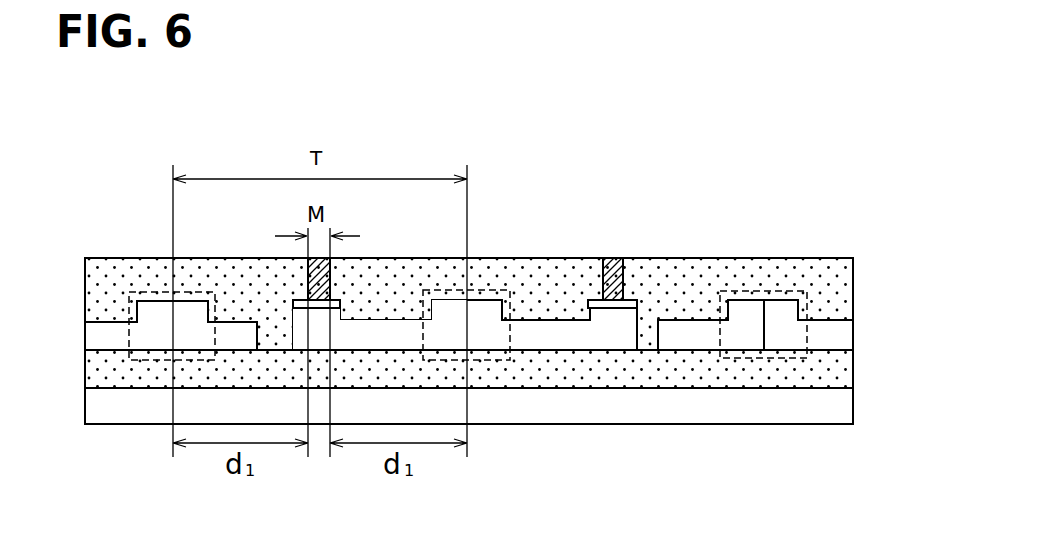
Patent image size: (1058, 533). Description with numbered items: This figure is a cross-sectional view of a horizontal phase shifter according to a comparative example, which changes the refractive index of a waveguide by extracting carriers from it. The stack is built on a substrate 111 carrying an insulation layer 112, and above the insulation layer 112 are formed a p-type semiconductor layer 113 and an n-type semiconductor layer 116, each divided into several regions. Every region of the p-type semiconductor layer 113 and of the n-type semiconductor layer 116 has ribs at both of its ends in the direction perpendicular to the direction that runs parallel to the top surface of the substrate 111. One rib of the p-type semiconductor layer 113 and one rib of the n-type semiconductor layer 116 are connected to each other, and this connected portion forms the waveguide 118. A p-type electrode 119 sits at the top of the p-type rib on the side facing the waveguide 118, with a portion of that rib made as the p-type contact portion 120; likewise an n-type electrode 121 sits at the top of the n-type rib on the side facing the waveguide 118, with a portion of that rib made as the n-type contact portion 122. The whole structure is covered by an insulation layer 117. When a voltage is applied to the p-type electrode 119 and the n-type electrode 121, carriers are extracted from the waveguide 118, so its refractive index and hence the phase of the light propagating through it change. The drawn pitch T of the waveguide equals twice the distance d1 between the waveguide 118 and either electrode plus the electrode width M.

The substrate 111 is at (840, 405).
The insulation layer 112 is at (848, 360).
The p-type semiconductor layer 113 is at (390, 337).
The n-type semiconductor layer 116 is at (536, 337).
The insulation layer 117 is at (848, 283).
The waveguide 118 is at (762, 290).
The p-type electrode 119 is at (327, 275).
The p-type contact portion 120 is at (293, 300).
The n-type electrode 121 is at (617, 263).
The n-type contact portion 122 is at (595, 298).